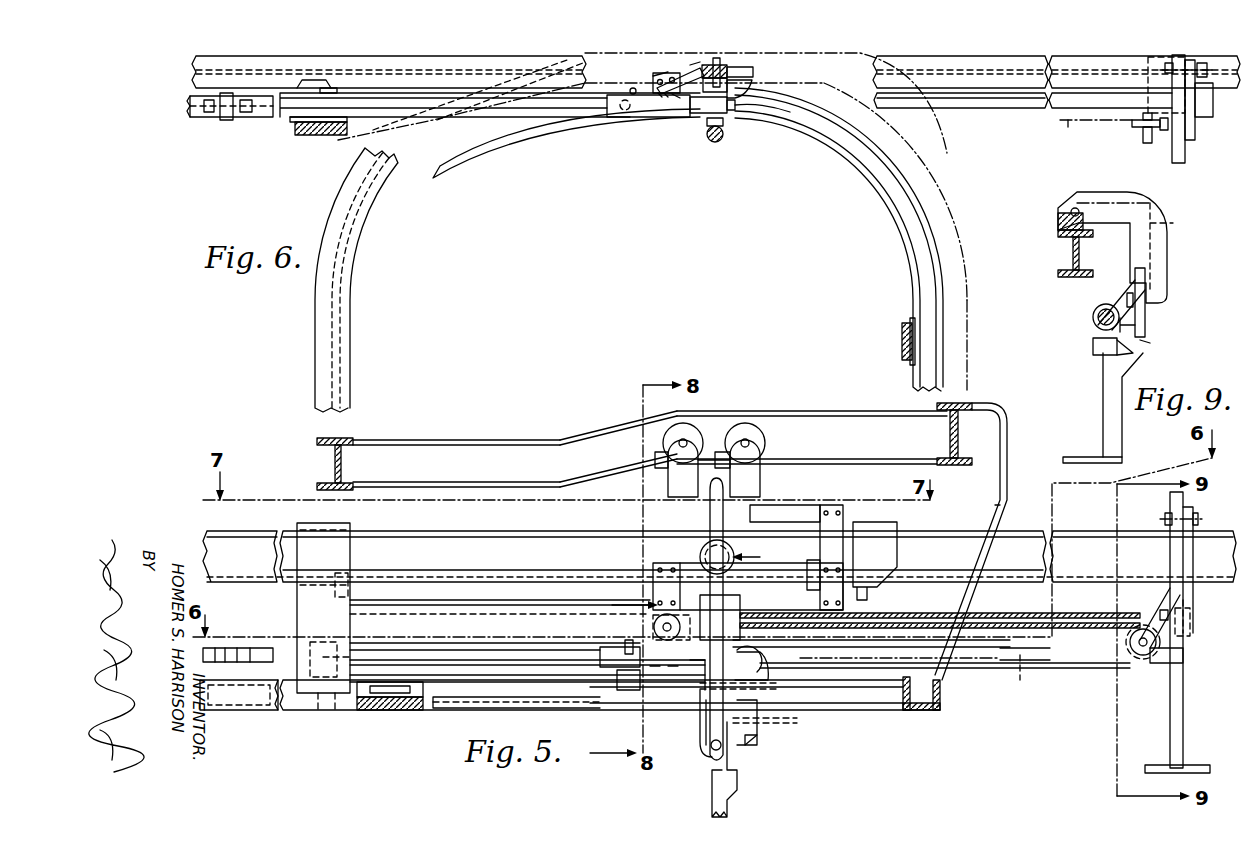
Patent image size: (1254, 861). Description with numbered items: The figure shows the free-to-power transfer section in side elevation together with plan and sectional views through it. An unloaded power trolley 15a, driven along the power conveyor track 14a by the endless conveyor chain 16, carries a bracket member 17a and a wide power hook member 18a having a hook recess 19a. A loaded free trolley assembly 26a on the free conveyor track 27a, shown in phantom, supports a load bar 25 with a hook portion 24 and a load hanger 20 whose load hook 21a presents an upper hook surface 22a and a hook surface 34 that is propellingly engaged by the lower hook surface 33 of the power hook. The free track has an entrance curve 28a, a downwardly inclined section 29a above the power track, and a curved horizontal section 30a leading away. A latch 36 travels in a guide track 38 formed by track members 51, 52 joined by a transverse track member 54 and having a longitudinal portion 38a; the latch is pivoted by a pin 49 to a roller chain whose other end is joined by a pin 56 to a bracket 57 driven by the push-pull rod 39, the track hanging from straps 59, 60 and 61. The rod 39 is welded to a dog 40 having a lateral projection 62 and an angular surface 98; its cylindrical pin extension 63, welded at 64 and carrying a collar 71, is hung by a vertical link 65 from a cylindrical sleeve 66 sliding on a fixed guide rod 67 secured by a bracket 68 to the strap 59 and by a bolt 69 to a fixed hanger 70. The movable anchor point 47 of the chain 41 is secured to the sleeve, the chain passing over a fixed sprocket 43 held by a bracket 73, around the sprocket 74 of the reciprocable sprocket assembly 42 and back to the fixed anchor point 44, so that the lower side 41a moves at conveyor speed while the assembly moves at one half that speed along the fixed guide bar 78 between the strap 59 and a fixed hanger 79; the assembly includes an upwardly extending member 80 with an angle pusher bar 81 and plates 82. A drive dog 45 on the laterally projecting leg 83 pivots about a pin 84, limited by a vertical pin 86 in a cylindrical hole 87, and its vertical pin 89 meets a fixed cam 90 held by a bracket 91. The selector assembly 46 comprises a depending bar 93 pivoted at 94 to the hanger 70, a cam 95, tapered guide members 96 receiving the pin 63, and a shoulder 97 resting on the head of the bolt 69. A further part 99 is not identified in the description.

In FIG. 6, the power conveyor track 14a is at (480, 66).
In FIG. 9, the power conveyor track 14a is at (1068, 255).
In FIG. 5, the power conveyor track 14a is at (915, 528).
In FIG. 6, the power trolley 15a is at (723, 66).
In FIG. 5, the power trolley 15a is at (770, 645).
In FIG. 5, the endless conveyor chain 16 is at (384, 710).
In FIG. 6, the power trolley bracket member 17a is at (751, 70).
In FIG. 5, the power trolley bracket member 17a is at (768, 672).
In FIG. 5, the power hook member 18a is at (790, 717).
In FIG. 5, the hook recess 19a is at (700, 720).
In FIG. 5, the load hanger 20 is at (712, 802).
In FIG. 5, the load hook 21a is at (705, 748).
In FIG. 5, the upper hook surface 22a is at (770, 686).
In FIG. 5, the hook portion 24 is at (712, 752).
In FIG. 6, the load bar 25 is at (716, 143).
In FIG. 5, the load bar 25 is at (708, 516).
In FIG. 5, the free trolley assembly 26a is at (760, 466).
In FIG. 6, the free conveyor track 27a is at (970, 352).
In FIG. 5, the free conveyor track 27a is at (960, 432).
In FIG. 6, the curved horizontal section 28a is at (938, 178).
In FIG. 5, the curved horizontal section 28a is at (835, 421).
In FIG. 6, the downwardly inclined section 29a is at (597, 56).
In FIG. 5, the downwardly inclined section 29a is at (610, 432).
In FIG. 6, the curved horizontal section 30a is at (428, 151).
In FIG. 5, the curved horizontal section 30a is at (470, 440).
In FIG. 5, the hook surface 33 is at (757, 733).
In FIG. 5, the hook surface 34 is at (760, 748).
In FIG. 6, the latch 36 is at (746, 108).
In FIG. 5, the latch 36 is at (638, 690).
In FIG. 6, the guide track 38 is at (906, 231).
In FIG. 6, the longitudinal portion 38a is at (202, 120).
In FIG. 6, the push-pull rod 39 is at (370, 118).
In FIG. 5, the push-pull rod 39 is at (533, 658).
In FIG. 6, the dog 40 is at (676, 98).
In FIG. 5, the dog 40 is at (615, 673).
In FIG. 6, the chain 41 is at (1068, 128).
In FIG. 5, the chain 41 is at (987, 662).
In FIG. 5, the lower side of chain 41a is at (1033, 660).
In FIG. 5, the reciprocable sprocket assembly 42 is at (612, 605).
In FIG. 6, the fixed sprocket 43 is at (1135, 125).
In FIG. 9, the fixed sprocket 43 is at (1150, 343).
In FIG. 5, the fixed sprocket 43 is at (1135, 655).
In FIG. 6, the fixed anchor point 44 is at (1150, 144).
In FIG. 9, the fixed anchor point 44 is at (1128, 295).
In FIG. 5, the fixed anchor point 44 is at (1158, 612).
In FIG. 6, the drive dog 45 is at (673, 78).
In FIG. 5, the drive dog 45 is at (632, 654).
In FIG. 6, the selector assembly 46 is at (1193, 142).
In FIG. 9, the selector assembly 46 is at (1157, 341).
In FIG. 5, the selector assembly 46 is at (1188, 650).
In FIG. 5, the movable anchor point 47 is at (702, 557).
In FIG. 6, the pin 49 is at (622, 112).
In FIG. 5, the track member 51 is at (941, 695).
In FIG. 5, the track member 52 is at (903, 685).
In FIG. 5, the transverse track member 54 is at (922, 710).
In FIG. 5, the pin 56 is at (232, 702).
In FIG. 6, the bracket 57 is at (228, 121).
In FIG. 5, the bracket 57 is at (205, 656).
In FIG. 6, the strap hanger 59 is at (313, 136).
In FIG. 5, the strap hanger 59 is at (297, 602).
In FIG. 6, the strap 60 is at (902, 345).
In FIG. 5, the strap 60 is at (995, 530).
In FIG. 5, the strap 61 is at (1006, 510).
In FIG. 6, the lateral projection 62 is at (715, 60).
In FIG. 6, the cylindrical pin extension 63 is at (733, 112).
In FIG. 5, the cylindrical pin extension 63 is at (752, 660).
In FIG. 6, the weld 64 is at (694, 110).
In FIG. 6, the vertical link 65 is at (706, 118).
In FIG. 5, the vertical link 65 is at (700, 675).
In FIG. 5, the cylindrical sleeve 66 is at (748, 612).
In FIG. 6, the fixed guide rod 67 is at (984, 108).
In FIG. 9, the fixed guide rod 67 is at (1095, 326).
In FIG. 5, the fixed guide rod 67 is at (462, 623).
In FIG. 5, the bracket 68 is at (350, 604).
In FIG. 6, the bolt 69 is at (1191, 117).
In FIG. 9, the bolt 69 is at (1097, 317).
In FIG. 5, the bolt 69 is at (1188, 612).
In FIG. 6, the fixed hanger 70 is at (1184, 160).
In FIG. 9, the fixed hanger 70 is at (1168, 262).
In FIG. 5, the fixed hanger 70 is at (1172, 553).
In FIG. 6, the collar 71 is at (751, 92).
In FIG. 6, the bracket 73 is at (1141, 130).
In FIG. 9, the bracket 73 is at (1147, 320).
In FIG. 5, the bracket 73 is at (1168, 590).
In FIG. 5, the sprocket 74 is at (654, 627).
In FIG. 5, the fixed guide bar 78 is at (468, 569).
In FIG. 5, the fixed hanger 79 is at (898, 553).
In FIG. 5, the upwardly extending member 80 is at (820, 545).
In FIG. 5, the angle pusher bar 81 is at (805, 503).
In FIG. 5, the plates 82 is at (655, 575).
In FIG. 6, the laterally projecting leg 83 is at (666, 95).
In FIG. 6, the pin 84 is at (660, 75).
In FIG. 5, the pin 84 is at (672, 670).
In FIG. 6, the vertical pin 86 is at (660, 96).
In FIG. 5, the vertical pin 86 is at (655, 670).
In FIG. 6, the cylindrical hole 87 is at (658, 85).
In FIG. 6, the vertical pin 89 is at (630, 88).
In FIG. 5, the vertical pin 89 is at (612, 650).
In FIG. 6, the fixed cam 90 is at (331, 85).
In FIG. 5, the fixed cam 90 is at (352, 657).
In FIG. 6, the bracket 91 is at (301, 78).
In FIG. 5, the bracket 91 is at (326, 693).
In FIG. 6, the depending bar 93 is at (1194, 142).
In FIG. 9, the depending bar 93 is at (1153, 235).
In FIG. 5, the depending bar 93 is at (1193, 686).
In FIG. 6, the pivot connection 94 is at (1201, 66).
In FIG. 9, the pivot connection 94 is at (1070, 212).
In FIG. 5, the pivot connection 94 is at (1197, 519).
In FIG. 6, the cam 95 is at (1209, 97).
In FIG. 9, the cam 95 is at (1083, 457).
In FIG. 5, the cam 95 is at (1160, 765).
In FIG. 9, the tapered guide members 96 is at (1093, 347).
In FIG. 5, the tapered guide members 96 is at (1162, 664).
In FIG. 9, the shoulder 97 is at (1118, 292).
In FIG. 6, the angular surface 98 is at (693, 66).
In FIG. 6, the curved bar 99 is at (484, 150).
In FIG. 5, the curved bar 99 is at (505, 708).